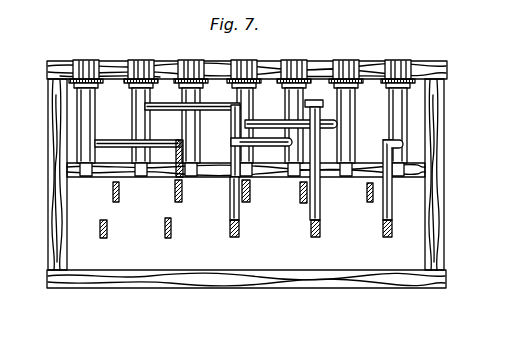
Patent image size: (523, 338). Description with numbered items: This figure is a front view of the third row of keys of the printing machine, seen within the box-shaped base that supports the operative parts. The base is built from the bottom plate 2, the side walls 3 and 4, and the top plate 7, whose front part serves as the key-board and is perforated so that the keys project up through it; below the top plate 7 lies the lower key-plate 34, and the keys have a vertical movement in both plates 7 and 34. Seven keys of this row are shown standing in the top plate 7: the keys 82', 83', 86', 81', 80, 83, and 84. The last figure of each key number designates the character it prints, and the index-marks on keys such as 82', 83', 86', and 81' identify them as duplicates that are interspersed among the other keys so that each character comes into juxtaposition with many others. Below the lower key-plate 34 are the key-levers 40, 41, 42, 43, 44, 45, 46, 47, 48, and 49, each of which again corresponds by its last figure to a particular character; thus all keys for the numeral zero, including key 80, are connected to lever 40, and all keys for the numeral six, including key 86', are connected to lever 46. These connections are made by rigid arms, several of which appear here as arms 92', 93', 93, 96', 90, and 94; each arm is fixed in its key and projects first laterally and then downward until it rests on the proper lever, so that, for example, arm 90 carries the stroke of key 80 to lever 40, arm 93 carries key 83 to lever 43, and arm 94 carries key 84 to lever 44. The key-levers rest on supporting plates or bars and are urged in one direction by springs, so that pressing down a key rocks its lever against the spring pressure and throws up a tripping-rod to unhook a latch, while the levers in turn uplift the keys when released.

The top plate 7 is at (440, 64).
The bottom plate 2 is at (287, 279).
The side wall 3 is at (55, 207).
The side wall 4 is at (445, 206).
The lower key-plate 34 is at (68, 170).
The key 82' is at (75, 105).
The key 83' is at (138, 104).
The key 86' is at (189, 105).
The key 81' is at (244, 105).
The key 80 is at (297, 60).
The key 83 is at (354, 105).
The key 84 is at (410, 60).
The rigid arm 92' is at (137, 131).
The rigid arm 93' is at (192, 118).
The rigid arm 93 is at (314, 115).
The rigid arm 96' is at (248, 141).
The rigid arm 90 is at (230, 190).
The key-lever 40 is at (239, 231).
The key-lever 41 is at (320, 231).
The key-lever 42 is at (174, 188).
The key-lever 43 is at (250, 190).
The key-lever 44 is at (390, 231).
The key-lever 45 is at (171, 232).
The key-lever 46 is at (304, 196).
The key-lever 47 is at (107, 231).
The key-lever 48 is at (112, 191).
The key-lever 49 is at (369, 199).
The rigid arm 94 is at (392, 190).